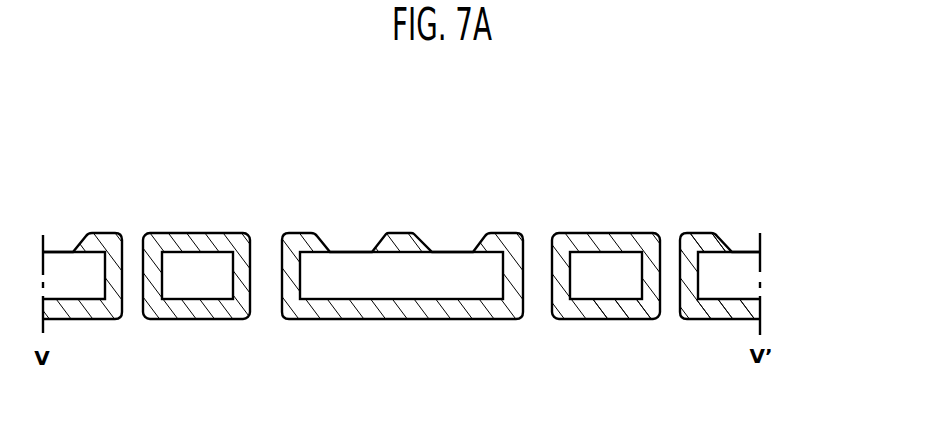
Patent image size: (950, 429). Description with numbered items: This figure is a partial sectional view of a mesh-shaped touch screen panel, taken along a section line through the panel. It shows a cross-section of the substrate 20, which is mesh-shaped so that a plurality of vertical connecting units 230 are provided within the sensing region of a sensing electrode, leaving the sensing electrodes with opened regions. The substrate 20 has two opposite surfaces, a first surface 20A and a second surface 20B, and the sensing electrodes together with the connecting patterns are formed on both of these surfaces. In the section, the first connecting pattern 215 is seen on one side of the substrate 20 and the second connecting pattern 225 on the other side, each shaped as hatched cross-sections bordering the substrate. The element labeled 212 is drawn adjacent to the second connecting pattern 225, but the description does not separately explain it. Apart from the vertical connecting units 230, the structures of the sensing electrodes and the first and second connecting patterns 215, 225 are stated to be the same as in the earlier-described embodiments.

The substrate 20 is at (713, 277).
The first surface of the substrate 20A is at (742, 251).
The second surface of the substrate 20B is at (742, 300).
The first tape member 212 is at (587, 279).
The first connecting pattern 215 is at (398, 243).
The second connecting pattern 225 is at (590, 319).
The vertical connecting unit 230 is at (130, 284).